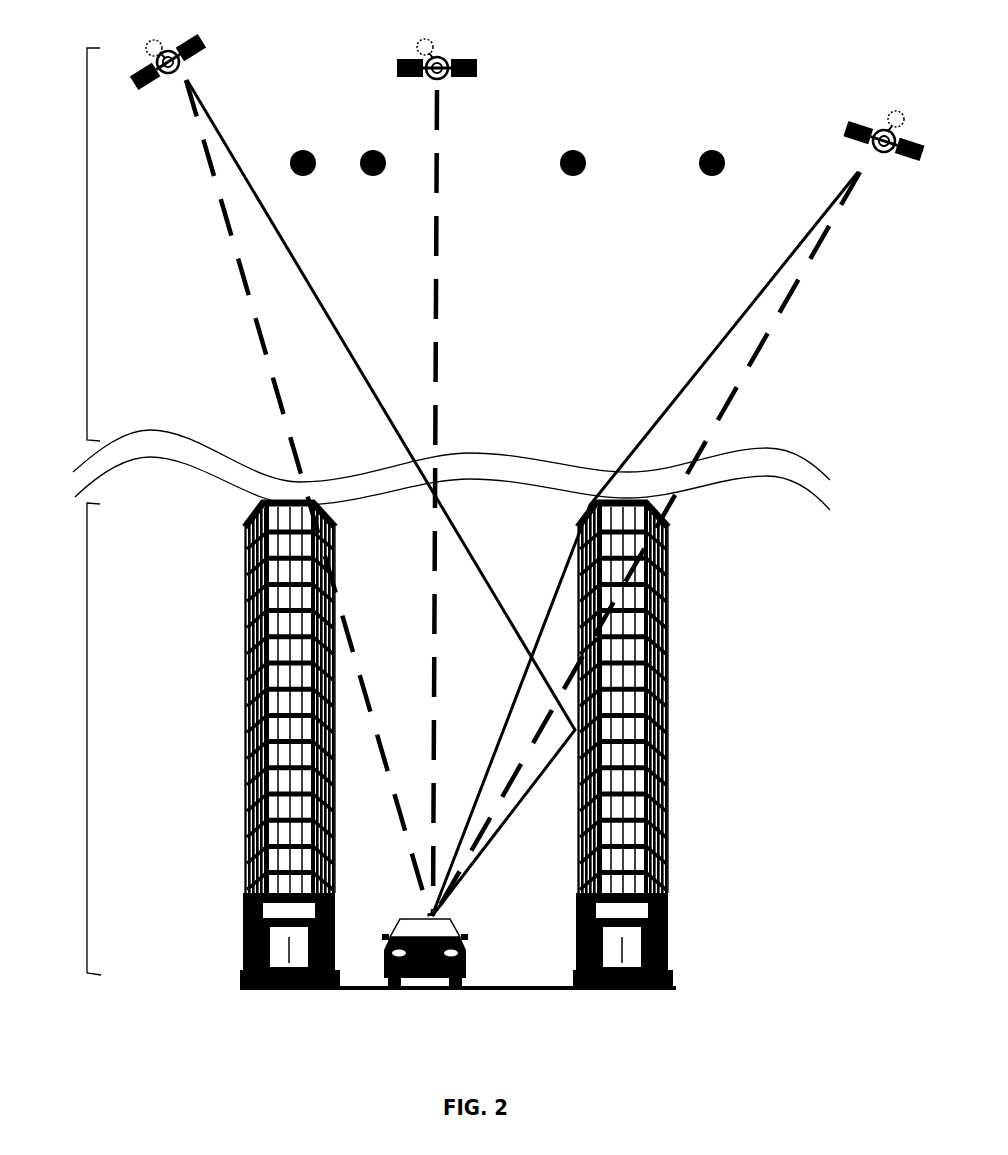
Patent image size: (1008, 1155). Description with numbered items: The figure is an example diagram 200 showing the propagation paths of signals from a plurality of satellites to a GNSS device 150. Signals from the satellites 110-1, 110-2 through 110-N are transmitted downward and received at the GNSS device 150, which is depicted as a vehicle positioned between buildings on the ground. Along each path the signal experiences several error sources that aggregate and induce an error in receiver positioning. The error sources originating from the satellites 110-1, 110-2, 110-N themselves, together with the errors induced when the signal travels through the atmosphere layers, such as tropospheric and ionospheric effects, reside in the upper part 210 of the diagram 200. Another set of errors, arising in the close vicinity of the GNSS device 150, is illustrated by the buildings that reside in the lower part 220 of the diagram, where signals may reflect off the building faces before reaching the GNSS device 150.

The satellite 110-1 is at (205, 63).
The satellite 110-2 is at (473, 73).
The satellite 110-N is at (893, 102).
The GNSS device 150 is at (462, 942).
The example diagram 200 is at (788, 748).
The upper part 210 is at (86, 223).
The lower part 220 is at (85, 715).